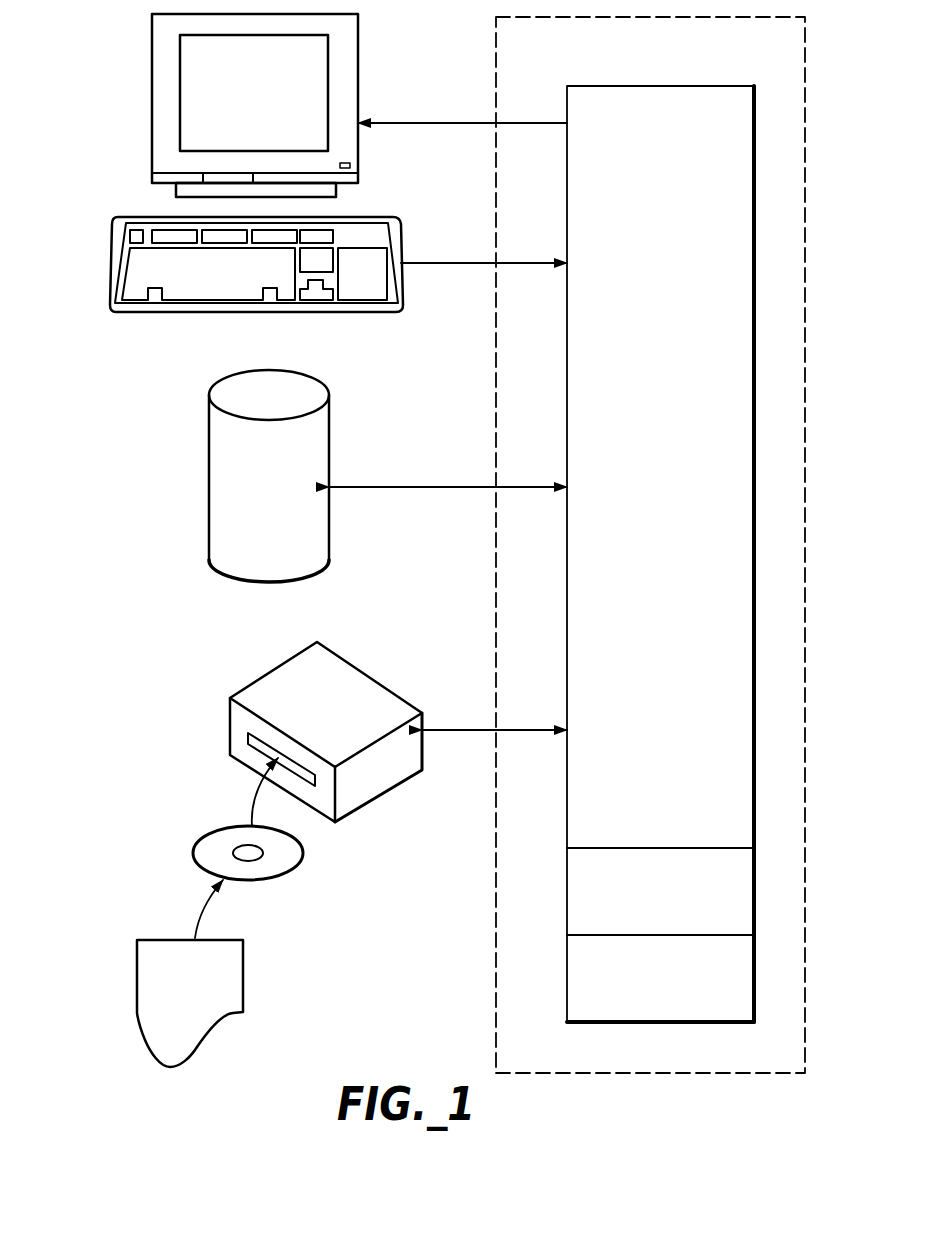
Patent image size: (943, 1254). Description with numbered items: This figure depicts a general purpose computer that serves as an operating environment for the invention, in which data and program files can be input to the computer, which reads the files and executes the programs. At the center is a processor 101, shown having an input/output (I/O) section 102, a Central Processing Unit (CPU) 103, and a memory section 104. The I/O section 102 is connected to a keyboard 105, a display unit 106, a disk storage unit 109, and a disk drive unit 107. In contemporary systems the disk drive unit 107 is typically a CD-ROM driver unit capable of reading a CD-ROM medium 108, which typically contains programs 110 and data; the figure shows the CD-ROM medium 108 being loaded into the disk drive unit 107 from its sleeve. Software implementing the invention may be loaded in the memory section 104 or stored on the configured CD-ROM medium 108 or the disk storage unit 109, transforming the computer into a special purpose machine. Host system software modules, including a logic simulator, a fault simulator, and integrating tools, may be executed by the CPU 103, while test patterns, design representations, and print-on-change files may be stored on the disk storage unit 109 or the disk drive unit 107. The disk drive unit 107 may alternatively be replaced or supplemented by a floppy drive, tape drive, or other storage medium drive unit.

The processor 101 is at (805, 65).
The input/output (I/O) section 102 is at (585, 350).
The Central Processing Unit (CPU) 103 is at (585, 906).
The memory section 104 is at (585, 990).
The keyboard 105 is at (115, 262).
The display unit 106 is at (152, 58).
The disk drive unit 107 is at (278, 663).
The CD-ROM medium 108 is at (221, 830).
The disk storage unit 109 is at (209, 478).
The programs 110 is at (173, 938).